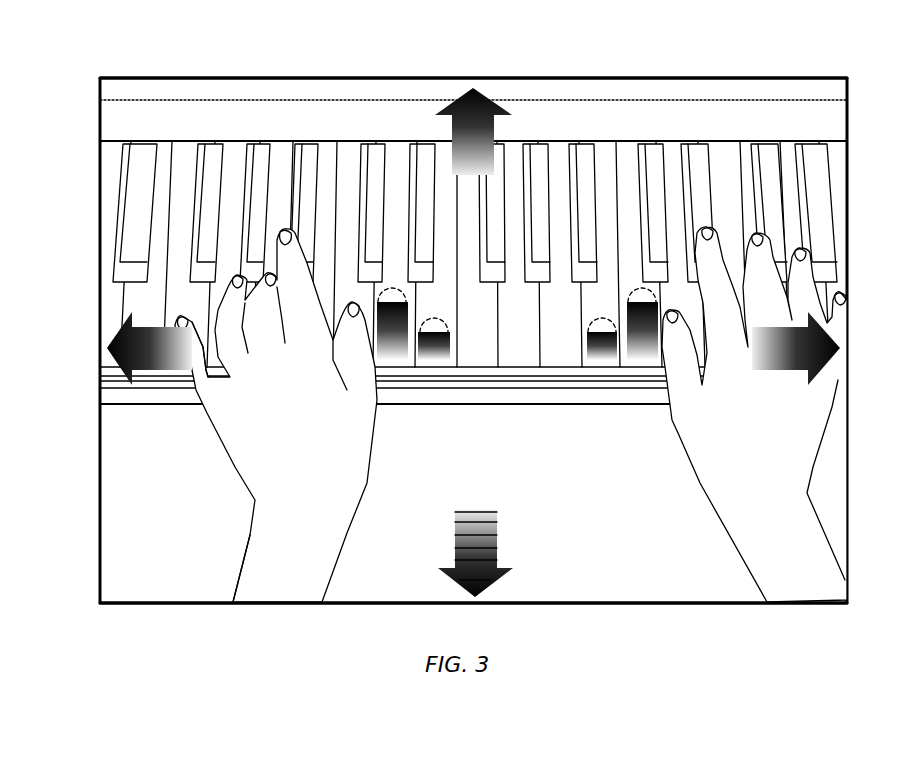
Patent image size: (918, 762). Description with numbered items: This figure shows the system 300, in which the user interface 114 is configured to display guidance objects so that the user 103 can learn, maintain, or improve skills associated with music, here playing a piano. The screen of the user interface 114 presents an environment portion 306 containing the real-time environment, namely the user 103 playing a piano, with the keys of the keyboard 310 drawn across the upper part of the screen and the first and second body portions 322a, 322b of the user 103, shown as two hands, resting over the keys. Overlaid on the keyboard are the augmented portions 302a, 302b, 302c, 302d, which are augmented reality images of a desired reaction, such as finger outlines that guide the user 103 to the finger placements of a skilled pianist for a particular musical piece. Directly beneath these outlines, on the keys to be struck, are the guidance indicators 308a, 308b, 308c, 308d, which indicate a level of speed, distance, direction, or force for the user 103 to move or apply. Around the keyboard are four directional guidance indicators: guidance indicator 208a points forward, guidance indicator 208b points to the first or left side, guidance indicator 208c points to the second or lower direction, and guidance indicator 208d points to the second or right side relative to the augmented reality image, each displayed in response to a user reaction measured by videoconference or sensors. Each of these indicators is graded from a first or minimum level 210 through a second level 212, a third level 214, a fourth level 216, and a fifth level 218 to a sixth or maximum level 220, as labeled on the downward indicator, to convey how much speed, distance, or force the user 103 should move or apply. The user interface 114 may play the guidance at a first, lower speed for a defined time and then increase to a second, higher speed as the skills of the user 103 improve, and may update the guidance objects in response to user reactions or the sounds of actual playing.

The system 300 is at (153, 46).
The user interface 114 is at (215, 77).
The virtual keyboard keys 310 is at (157, 195).
The augmented portion 302a is at (393, 297).
The augmented portion 302b is at (437, 320).
The augmented portion 302c is at (605, 318).
The augmented portion 302d is at (660, 295).
The guidance indicator 208a is at (497, 132).
The guidance indicator 208b is at (165, 375).
The guidance indicator 208c is at (455, 535).
The guidance indicator 208d is at (778, 375).
The guidance indicator 308a is at (393, 355).
The guidance indicator 308b is at (437, 355).
The guidance indicator 308c is at (605, 355).
The guidance indicator 308d is at (645, 355).
The first body portion 322a is at (248, 480).
The second body portion 322b is at (760, 478).
The user 103 is at (250, 585).
The environment portion 306 is at (635, 568).
The first or minimum level 210 is at (500, 510).
The second level 212 is at (497, 520).
The third level 214 is at (497, 535).
The fourth level 216 is at (497, 548).
The fifth level 218 is at (493, 558).
The sixth or maximum level 220 is at (493, 588).